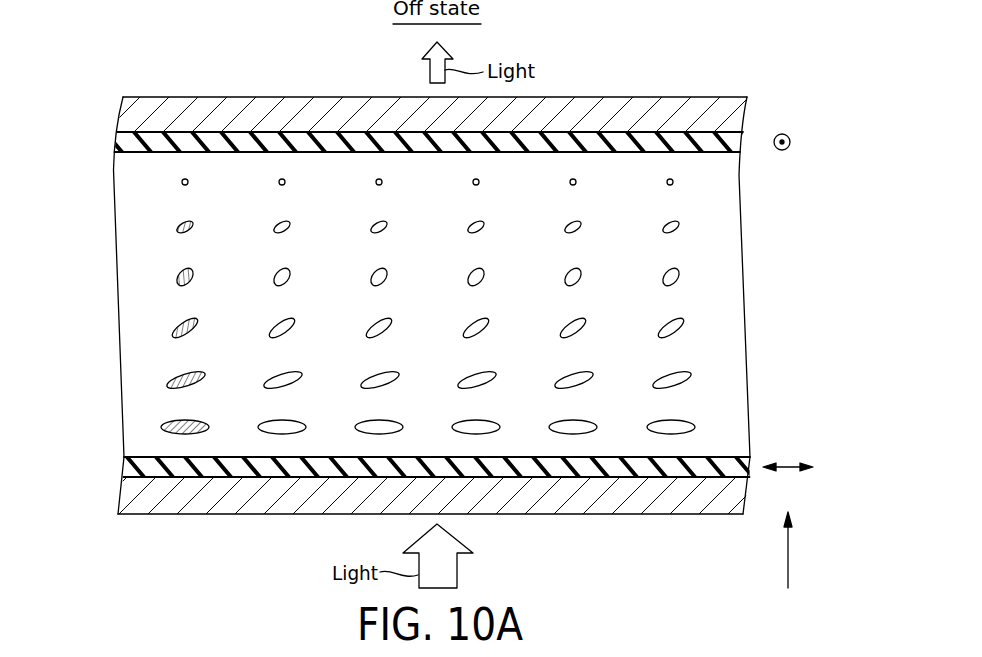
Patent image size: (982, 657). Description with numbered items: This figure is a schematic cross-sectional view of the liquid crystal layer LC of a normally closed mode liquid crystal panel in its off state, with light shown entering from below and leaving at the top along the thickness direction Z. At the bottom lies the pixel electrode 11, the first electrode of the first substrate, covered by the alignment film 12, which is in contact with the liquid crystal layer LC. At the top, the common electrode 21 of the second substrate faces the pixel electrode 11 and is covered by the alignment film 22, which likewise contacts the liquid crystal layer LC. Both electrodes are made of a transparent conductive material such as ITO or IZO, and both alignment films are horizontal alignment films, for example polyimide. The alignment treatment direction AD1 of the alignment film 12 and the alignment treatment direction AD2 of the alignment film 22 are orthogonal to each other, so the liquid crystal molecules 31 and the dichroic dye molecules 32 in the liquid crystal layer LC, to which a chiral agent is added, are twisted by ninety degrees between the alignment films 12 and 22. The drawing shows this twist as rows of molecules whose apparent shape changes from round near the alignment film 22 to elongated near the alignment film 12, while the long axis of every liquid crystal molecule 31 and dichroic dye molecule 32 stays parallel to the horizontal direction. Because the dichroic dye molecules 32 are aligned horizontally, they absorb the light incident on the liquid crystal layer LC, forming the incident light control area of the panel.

The pixel electrode 11 is at (125, 504).
The alignment film 12 is at (127, 466).
The common electrode 21 is at (122, 114).
The alignment film 22 is at (118, 146).
The liquid crystal layer LC is at (707, 181).
The liquid crystal molecules 31 is at (299, 418).
The dichroic dye molecules 32 is at (203, 418).
The alignment treatment direction AD1 is at (787, 461).
The alignment treatment direction AD2 is at (783, 132).
The Z direction (thickness direction) Z is at (788, 538).